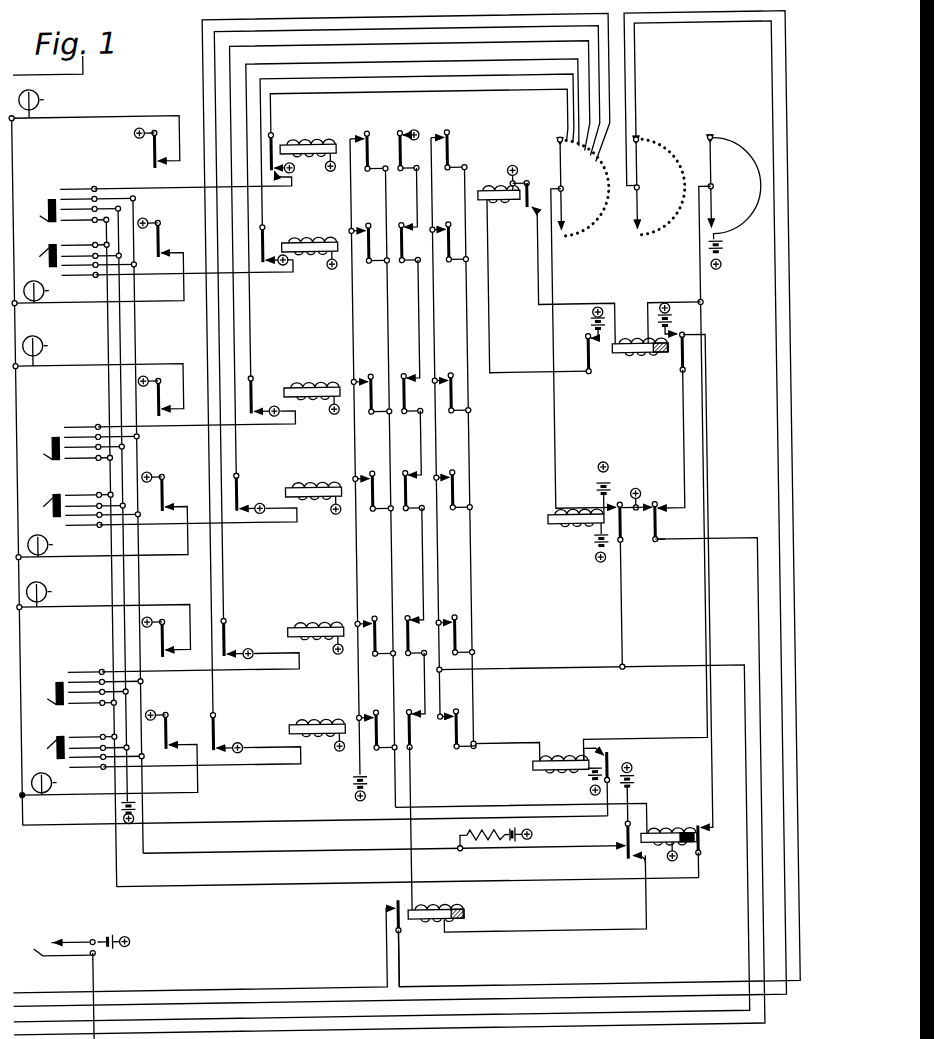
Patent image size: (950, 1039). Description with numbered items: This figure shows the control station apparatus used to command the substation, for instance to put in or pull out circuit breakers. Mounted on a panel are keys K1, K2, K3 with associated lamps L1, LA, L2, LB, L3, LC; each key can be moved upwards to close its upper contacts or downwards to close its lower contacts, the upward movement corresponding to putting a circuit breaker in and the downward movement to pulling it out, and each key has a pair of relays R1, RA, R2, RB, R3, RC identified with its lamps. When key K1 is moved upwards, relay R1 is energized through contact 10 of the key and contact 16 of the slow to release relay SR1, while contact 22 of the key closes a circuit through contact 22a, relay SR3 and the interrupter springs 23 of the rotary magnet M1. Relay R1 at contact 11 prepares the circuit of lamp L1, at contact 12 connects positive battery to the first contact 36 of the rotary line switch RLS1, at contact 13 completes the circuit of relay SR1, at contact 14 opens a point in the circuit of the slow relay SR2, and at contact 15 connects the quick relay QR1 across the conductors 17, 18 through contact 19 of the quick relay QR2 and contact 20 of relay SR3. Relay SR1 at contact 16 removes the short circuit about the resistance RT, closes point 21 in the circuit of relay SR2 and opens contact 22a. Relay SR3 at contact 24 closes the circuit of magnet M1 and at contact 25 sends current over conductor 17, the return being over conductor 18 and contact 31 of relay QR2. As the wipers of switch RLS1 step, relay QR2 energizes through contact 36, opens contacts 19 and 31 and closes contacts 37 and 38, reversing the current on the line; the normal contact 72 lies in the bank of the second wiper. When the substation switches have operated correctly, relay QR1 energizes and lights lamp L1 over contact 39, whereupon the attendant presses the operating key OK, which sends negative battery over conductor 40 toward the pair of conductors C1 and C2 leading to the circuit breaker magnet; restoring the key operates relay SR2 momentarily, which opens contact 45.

The contact of key K1 10 is at (81, 177).
The contact of relay R1 11 is at (163, 155).
The contact of relay R1 12 is at (295, 174).
The contact of relay R1 13 is at (372, 132).
The back contact of relay R1 14 is at (405, 132).
The contact of relay R1 15 is at (450, 132).
The contact of relay SR1 16 is at (614, 846).
The conductor 17 is at (757, 614).
The conductor 18 is at (621, 622).
The contact of relay QR2 19 is at (657, 508).
The contact of relay SR3 20 is at (690, 349).
The contact of relay SR1 21 is at (630, 872).
The contact of key K1 22 is at (43, 199).
The contact of relay SR1 22a is at (695, 832).
The interrupter springs of magnet M1 23 is at (540, 214).
The contact of relay SR3 24 is at (592, 336).
The contact of relay SR3 25 is at (687, 337).
The contact of relay QR2 31 is at (636, 488).
The first contact of rotary line switch RLS1 36 is at (566, 139).
The contact of relay QR2 37 is at (610, 509).
The contact of relay QR2 38 is at (656, 544).
The contact of relay QR1 39 is at (607, 758).
The conductor 40 is at (84, 978).
The contact of relay SR2 45 is at (380, 906).
The normal contact of rotary line switch RLS1 72 is at (644, 139).
The key K1 is at (101, 196).
The key K2 is at (100, 447).
The key K3 is at (106, 688).
The lamp L1 is at (42, 103).
The lamp L2 is at (46, 350).
The lamp L3 is at (49, 594).
The lamp LA is at (47, 291).
The lamp LB is at (51, 545).
The lamp LC is at (54, 783).
The relay R1 is at (302, 142).
The relay RA is at (299, 243).
The relay R2 is at (294, 389).
The relay RB is at (288, 489).
The relay R3 is at (282, 630).
The relay RC is at (277, 726).
The rotary magnet M1 is at (498, 184).
The rotary line switch RLS1 is at (400, 509).
The slow to release relay SR1 is at (668, 828).
The slow relay SR2 is at (458, 913).
The slow relay SR3 is at (620, 356).
The quick relay QR1 is at (530, 756).
The quick relay QR2 is at (555, 513).
The resistance RT is at (455, 836).
The operating key OK is at (81, 937).
The pair of conductors C1 is at (143, 987).
The conductor C2 is at (170, 999).